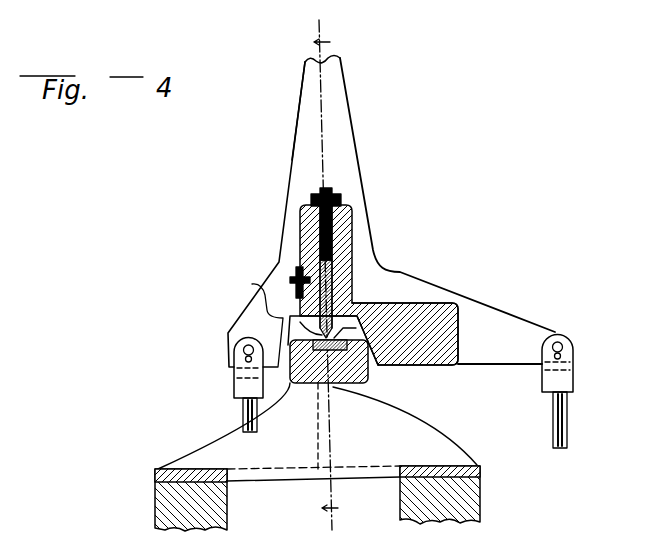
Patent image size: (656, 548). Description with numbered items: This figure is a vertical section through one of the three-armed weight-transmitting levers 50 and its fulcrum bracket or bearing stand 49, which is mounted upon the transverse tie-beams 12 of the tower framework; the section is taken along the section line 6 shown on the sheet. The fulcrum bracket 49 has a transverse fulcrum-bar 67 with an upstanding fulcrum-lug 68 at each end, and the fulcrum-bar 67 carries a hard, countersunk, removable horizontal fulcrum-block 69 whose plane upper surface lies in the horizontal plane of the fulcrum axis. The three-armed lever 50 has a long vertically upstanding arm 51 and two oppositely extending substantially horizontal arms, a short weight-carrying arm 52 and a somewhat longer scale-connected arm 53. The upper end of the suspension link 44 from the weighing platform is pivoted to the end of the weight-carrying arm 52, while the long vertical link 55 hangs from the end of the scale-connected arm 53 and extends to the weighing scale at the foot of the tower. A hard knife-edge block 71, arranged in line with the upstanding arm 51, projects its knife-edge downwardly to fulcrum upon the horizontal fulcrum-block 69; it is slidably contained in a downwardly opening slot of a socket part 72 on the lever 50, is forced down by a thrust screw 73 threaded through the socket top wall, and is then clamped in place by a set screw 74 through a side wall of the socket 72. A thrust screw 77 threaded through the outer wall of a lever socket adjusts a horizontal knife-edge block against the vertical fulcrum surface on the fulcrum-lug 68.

The section line 6- 6 is at (332, 276).
The transverse tie-beams 12 is at (472, 495).
The suspension link 44 is at (243, 413).
The fulcrum bracket 49 is at (400, 430).
The three-armed lever 50 is at (362, 227).
The upstanding arm 51 is at (300, 153).
The weight-carrying arm 52 is at (242, 333).
The scale-connected arm 53 is at (518, 328).
The long vertical link 55 is at (567, 413).
The fulcrum-bar 67 is at (368, 379).
The fulcrum-lug 68 is at (345, 249).
The horizontal fulcrum-block 69 is at (304, 322).
The knife-edge block 71 is at (322, 270).
The socket part 72 is at (308, 248).
The thrust screw 73 is at (320, 195).
The set screw 74 is at (290, 279).
The thrust screw 77 is at (452, 300).